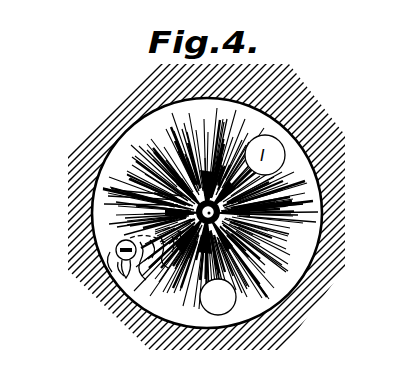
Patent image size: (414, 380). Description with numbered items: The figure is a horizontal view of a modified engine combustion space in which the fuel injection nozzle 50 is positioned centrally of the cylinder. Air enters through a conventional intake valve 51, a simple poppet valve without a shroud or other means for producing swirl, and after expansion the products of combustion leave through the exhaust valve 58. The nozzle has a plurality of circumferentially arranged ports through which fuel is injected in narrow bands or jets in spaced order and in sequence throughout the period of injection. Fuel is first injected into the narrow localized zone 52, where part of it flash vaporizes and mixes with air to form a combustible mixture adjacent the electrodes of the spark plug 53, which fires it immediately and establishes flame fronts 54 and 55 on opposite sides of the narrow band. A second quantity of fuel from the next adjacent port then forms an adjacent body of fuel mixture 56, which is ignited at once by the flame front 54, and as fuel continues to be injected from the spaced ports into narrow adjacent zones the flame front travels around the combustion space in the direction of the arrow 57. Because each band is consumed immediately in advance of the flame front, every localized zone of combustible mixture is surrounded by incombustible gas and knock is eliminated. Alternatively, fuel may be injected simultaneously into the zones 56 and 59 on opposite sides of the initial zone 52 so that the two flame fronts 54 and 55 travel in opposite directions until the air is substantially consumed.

The fuel injection nozzle 50 is at (244, 232).
The intake valve 51 is at (303, 142).
The localized zone 52 is at (112, 278).
The spark plug 53 is at (118, 252).
The flame front 54 is at (150, 232).
The flame front 55 is at (136, 272).
The adjacent body of fuel mixture 56 is at (145, 195).
The arrow 57 is at (190, 146).
The exhaust valve 58 is at (226, 315).
The zone 59 is at (152, 322).